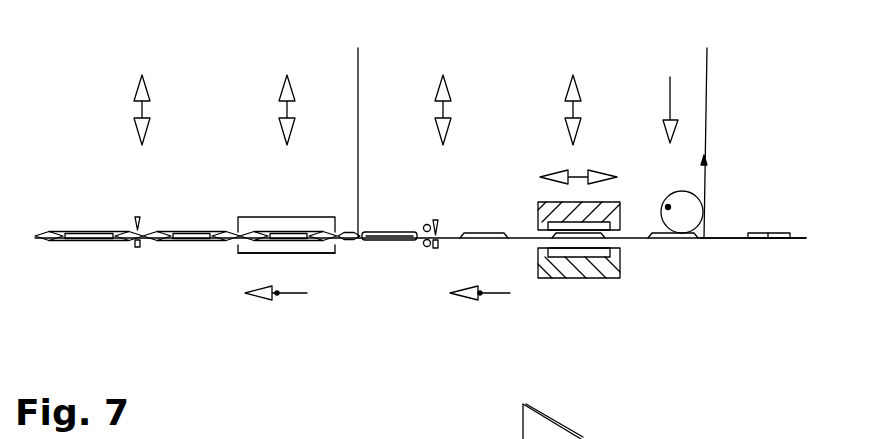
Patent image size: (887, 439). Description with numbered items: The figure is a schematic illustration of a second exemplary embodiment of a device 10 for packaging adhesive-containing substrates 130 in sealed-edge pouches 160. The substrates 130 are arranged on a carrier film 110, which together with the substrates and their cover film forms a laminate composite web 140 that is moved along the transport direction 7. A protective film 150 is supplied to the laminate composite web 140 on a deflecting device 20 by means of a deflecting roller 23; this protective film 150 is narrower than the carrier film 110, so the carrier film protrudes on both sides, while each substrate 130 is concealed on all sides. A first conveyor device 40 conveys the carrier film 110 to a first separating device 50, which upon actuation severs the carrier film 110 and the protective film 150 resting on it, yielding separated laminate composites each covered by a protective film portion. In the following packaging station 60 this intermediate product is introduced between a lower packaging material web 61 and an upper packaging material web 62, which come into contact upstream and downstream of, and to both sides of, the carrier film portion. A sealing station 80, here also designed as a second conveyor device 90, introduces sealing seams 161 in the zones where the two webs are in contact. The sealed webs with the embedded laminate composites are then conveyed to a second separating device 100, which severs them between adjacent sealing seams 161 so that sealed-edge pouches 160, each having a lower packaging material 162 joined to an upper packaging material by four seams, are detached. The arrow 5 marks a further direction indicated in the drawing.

The device 10 is at (195, 188).
The sealed-edge pouch 160 is at (69, 228).
The lower packaging material 162 is at (90, 238).
The second separating device 100 is at (138, 222).
The sealing station 80 is at (249, 209).
The second conveyor device 90 is at (313, 208).
The sealing seam 161 is at (237, 242).
The lower packaging material web 61 is at (358, 129).
The upper packaging material web 62 is at (358, 238).
The packaging station 60 is at (424, 213).
The first separating device 50 is at (443, 208).
The first conveyor device 40 is at (564, 149).
The deflecting device 20 is at (671, 177).
The deflecting roller 23 is at (668, 207).
The carrier film 110 is at (650, 240).
The protective film 150 is at (710, 129).
The substrate 130 is at (768, 235).
The laminate composite web 140 is at (745, 243).
The transport direction 7 is at (277, 293).
The transport direction 5 is at (480, 293).